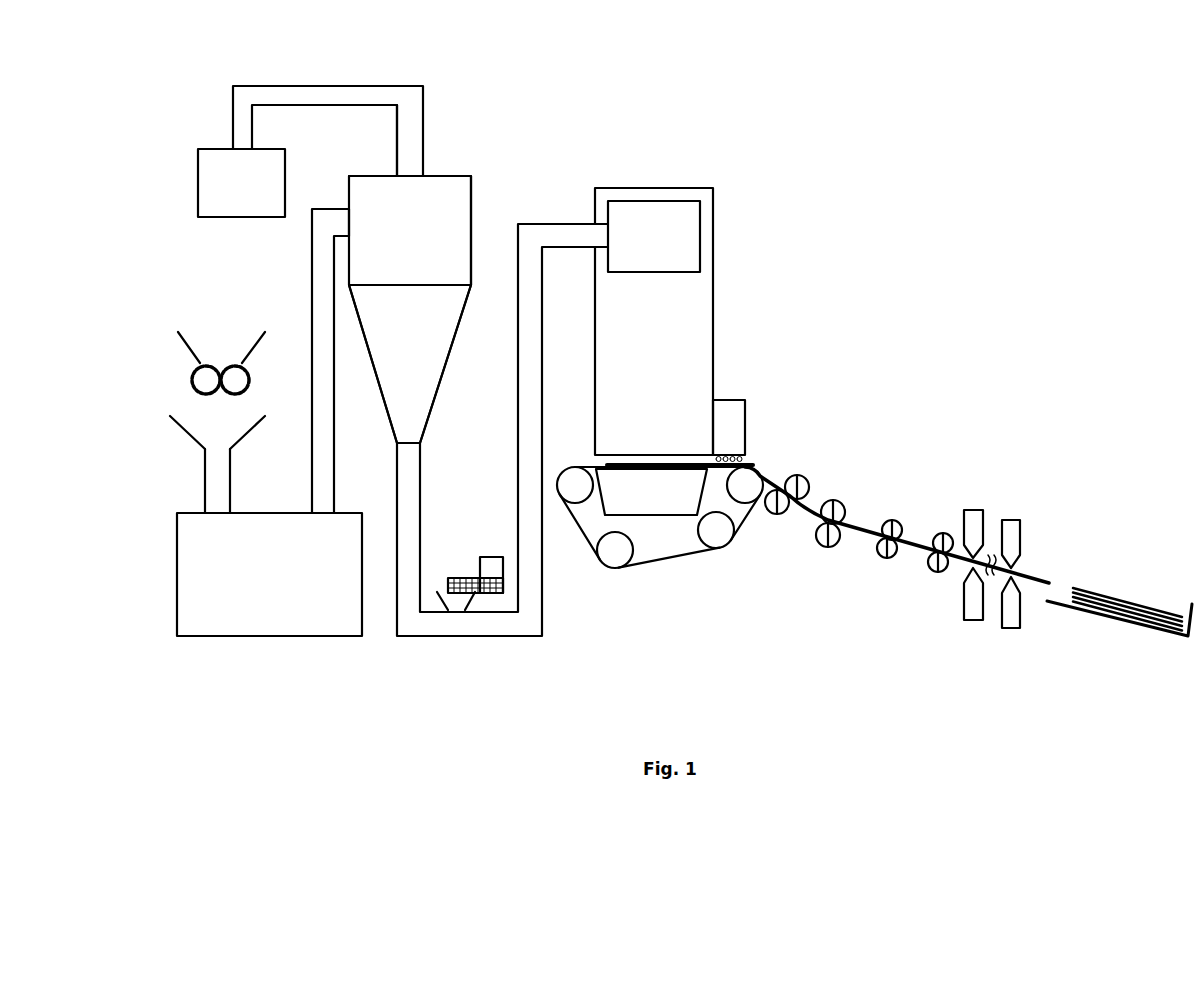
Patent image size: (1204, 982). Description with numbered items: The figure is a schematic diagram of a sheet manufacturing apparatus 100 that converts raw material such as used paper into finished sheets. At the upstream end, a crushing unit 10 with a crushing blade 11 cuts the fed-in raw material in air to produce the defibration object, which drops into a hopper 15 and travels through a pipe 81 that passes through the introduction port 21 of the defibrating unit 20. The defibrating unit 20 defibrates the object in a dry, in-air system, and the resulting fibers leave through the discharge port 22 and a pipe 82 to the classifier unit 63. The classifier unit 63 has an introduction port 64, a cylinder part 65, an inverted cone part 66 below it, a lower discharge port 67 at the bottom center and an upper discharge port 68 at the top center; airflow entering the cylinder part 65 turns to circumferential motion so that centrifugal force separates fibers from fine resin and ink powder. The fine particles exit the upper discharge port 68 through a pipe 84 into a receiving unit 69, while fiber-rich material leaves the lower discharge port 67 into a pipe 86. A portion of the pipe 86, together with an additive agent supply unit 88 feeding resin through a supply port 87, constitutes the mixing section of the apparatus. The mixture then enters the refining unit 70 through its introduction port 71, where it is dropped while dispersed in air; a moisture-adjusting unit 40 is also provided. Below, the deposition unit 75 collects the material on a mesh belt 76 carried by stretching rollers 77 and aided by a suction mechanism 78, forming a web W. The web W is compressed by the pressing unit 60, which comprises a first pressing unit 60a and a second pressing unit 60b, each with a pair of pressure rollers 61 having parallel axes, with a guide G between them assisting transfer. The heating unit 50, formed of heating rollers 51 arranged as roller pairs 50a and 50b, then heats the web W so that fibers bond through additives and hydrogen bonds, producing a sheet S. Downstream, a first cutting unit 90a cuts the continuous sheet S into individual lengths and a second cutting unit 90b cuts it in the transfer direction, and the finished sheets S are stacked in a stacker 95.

The sheet manufacturing apparatus 100 is at (952, 128).
The crushing unit 10 is at (238, 322).
The crushing blade 11 is at (206, 380).
The hopper 15 is at (200, 436).
The defibrating unit 20 is at (303, 638).
The introduction port 21 is at (218, 516).
The discharge port 22 is at (321, 516).
The moisture-adjusting unit 40 is at (740, 398).
The heating unit 50 is at (926, 479).
The first pressing roller pair 50a is at (904, 516).
The second pressing roller pair 50b is at (955, 528).
The heating rollers 51 is at (889, 522).
The pressing unit 60 is at (838, 431).
The first pressing unit 60a is at (812, 470).
The second pressing unit 60b is at (848, 497).
The pressure rollers 61 is at (797, 478).
The classifier unit 63 is at (480, 166).
The introduction port 64 is at (350, 224).
The cylinder part 65 is at (434, 237).
The inverted cone part 66 is at (414, 352).
The lower discharge port 67 is at (405, 437).
The upper discharge port 68 is at (409, 178).
The receiving unit 69 is at (218, 185).
The refining unit 70 is at (720, 200).
The introduction port 71 is at (610, 237).
The deposition unit 75 is at (584, 458).
The mesh belt 76 is at (693, 558).
The stretching rollers 77 is at (576, 490).
The suction mechanism 78 is at (655, 493).
The pipe 81 is at (218, 477).
The pipe 82 is at (318, 242).
The pipe 84 is at (328, 100).
The pipe 86 is at (412, 482).
The supply port 87 is at (458, 613).
The additive agent supply unit 88 is at (486, 567).
The first cutting unit 90a is at (973, 620).
The second cutting unit 90b is at (1022, 628).
The stacker 95 is at (1115, 615).
The web W is at (770, 467).
The guide G is at (790, 514).
The sheet S is at (1033, 566).